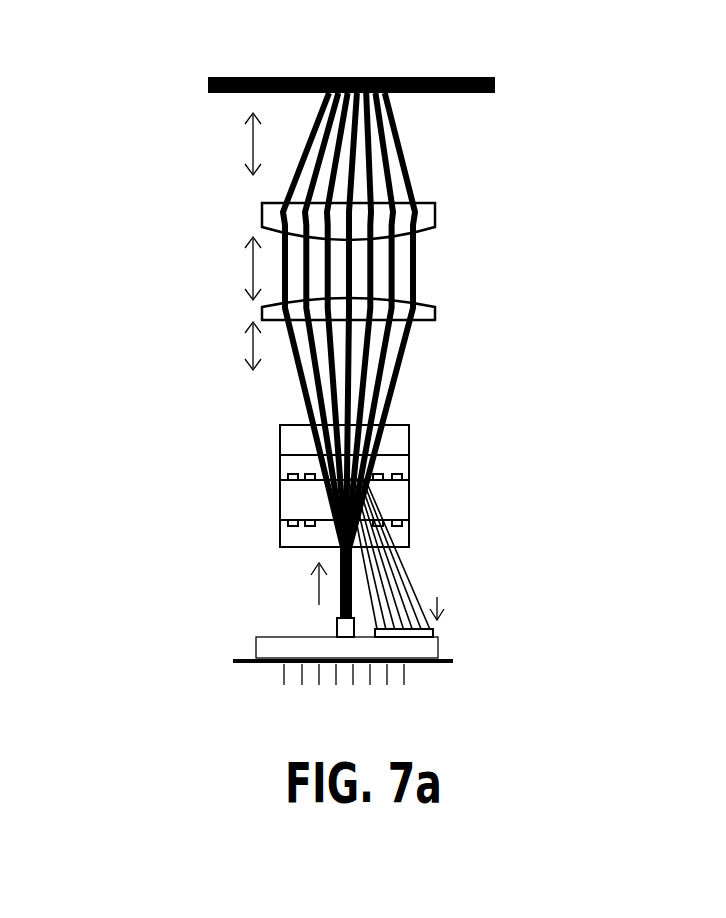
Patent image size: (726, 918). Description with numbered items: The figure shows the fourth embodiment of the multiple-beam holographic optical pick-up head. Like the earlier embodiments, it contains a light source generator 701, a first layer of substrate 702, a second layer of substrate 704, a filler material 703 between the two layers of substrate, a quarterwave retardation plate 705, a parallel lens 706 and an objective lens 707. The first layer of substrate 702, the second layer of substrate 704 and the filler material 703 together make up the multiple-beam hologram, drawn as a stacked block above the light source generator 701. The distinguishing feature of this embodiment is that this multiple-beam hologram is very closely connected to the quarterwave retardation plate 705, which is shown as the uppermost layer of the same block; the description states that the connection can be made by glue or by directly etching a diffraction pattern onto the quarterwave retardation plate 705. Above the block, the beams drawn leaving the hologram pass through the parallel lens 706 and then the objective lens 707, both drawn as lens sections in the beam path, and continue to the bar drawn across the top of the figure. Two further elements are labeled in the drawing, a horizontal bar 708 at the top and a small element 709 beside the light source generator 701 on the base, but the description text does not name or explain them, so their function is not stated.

The light source generator 701 is at (325, 623).
The first layer of substrate 702 is at (426, 533).
The filler material 703 is at (276, 507).
The second layer of substrate 704 is at (426, 461).
The quarterwave retardation plate 705 is at (276, 443).
The parallel lens 706 is at (460, 299).
The objective lens 707 is at (455, 198).
The optical disc 708 is at (384, 89).
The photodetector 709 is at (453, 627).